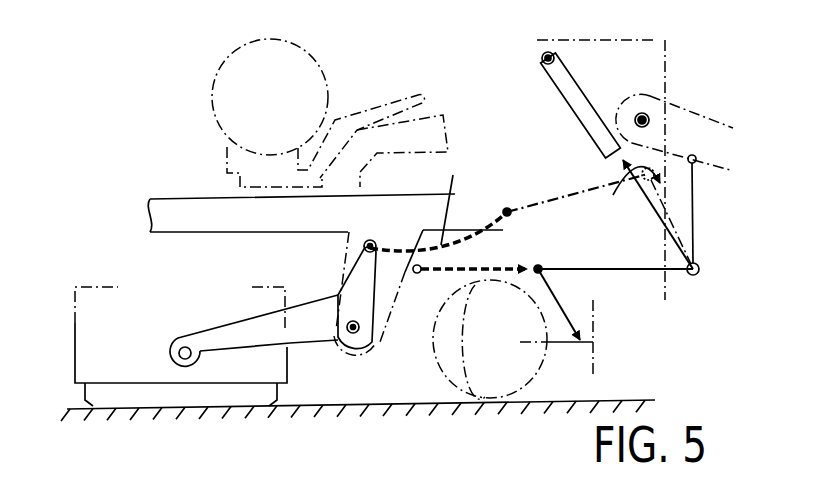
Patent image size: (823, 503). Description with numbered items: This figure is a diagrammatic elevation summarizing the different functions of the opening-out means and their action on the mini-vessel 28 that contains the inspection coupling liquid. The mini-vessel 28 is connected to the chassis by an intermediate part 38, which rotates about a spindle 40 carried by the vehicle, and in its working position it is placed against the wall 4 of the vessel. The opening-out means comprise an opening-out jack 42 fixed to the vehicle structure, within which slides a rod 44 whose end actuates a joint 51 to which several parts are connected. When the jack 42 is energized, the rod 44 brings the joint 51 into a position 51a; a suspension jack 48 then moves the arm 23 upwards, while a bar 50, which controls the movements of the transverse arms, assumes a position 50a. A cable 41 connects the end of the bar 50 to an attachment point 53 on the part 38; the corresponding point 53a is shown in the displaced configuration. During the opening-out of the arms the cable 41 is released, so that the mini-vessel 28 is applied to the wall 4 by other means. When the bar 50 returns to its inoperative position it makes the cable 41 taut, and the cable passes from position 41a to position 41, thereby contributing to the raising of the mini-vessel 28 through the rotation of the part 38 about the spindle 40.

The wall 4 is at (342, 408).
The mini-vessel 28 is at (132, 373).
The intermediate part 38 is at (295, 310).
The spindle 40 is at (353, 333).
The cable 41 is at (477, 272).
The position of cable 41a is at (452, 181).
The opening-out jack 42 is at (560, 80).
The arm 23 is at (700, 117).
The suspension jack 48 is at (694, 205).
The rod 44 is at (655, 215).
The joint 51 is at (697, 276).
The position of joint 51a is at (626, 178).
The bar 50 is at (575, 269).
The position of bar 50a is at (550, 196).
The attachment point 53 is at (417, 275).
The cable link 53a is at (372, 203).